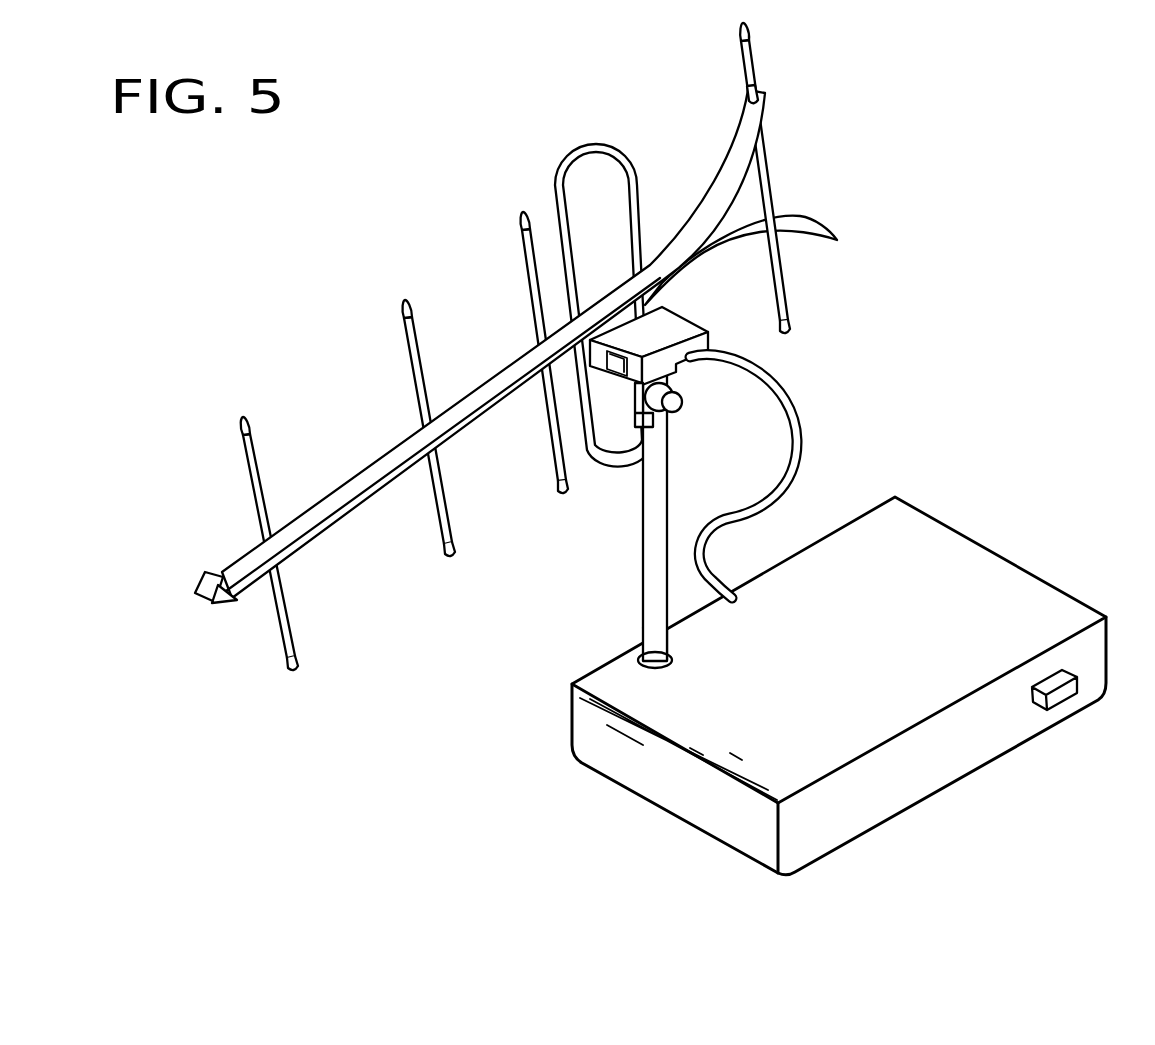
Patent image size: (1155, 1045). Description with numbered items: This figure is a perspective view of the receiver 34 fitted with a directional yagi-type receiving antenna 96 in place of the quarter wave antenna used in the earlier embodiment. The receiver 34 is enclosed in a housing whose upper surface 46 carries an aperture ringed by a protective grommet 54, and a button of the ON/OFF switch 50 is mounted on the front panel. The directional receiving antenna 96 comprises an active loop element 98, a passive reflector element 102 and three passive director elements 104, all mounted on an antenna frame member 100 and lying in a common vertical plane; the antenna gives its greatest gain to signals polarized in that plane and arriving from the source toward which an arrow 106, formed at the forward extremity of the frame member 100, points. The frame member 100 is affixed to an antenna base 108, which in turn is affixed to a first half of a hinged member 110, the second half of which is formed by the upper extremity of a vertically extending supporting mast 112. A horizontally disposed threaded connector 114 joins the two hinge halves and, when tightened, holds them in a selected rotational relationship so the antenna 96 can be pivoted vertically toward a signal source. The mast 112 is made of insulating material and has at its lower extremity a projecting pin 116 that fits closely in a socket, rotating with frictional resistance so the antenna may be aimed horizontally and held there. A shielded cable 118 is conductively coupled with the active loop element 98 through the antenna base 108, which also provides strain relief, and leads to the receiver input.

The receiver 34 is at (847, 681).
The upper surface 46 is at (867, 650).
The ON/OFF switch 50 is at (1065, 690).
The protective grommet 54 is at (673, 660).
The directional yagi-type receiving antenna 96 is at (483, 346).
The active loop element 98 is at (607, 147).
The antenna frame member 100 is at (468, 393).
The passive reflector element 102 is at (757, 52).
The passive director elements 104 is at (553, 398).
The arrow 106 is at (200, 577).
The antenna base 108 is at (677, 313).
The hinged member 110 is at (680, 382).
The supporting mast 112 is at (642, 508).
The threaded connector 114 is at (673, 407).
The projecting pin 116 is at (680, 636).
The shielded cable 118 is at (790, 395).